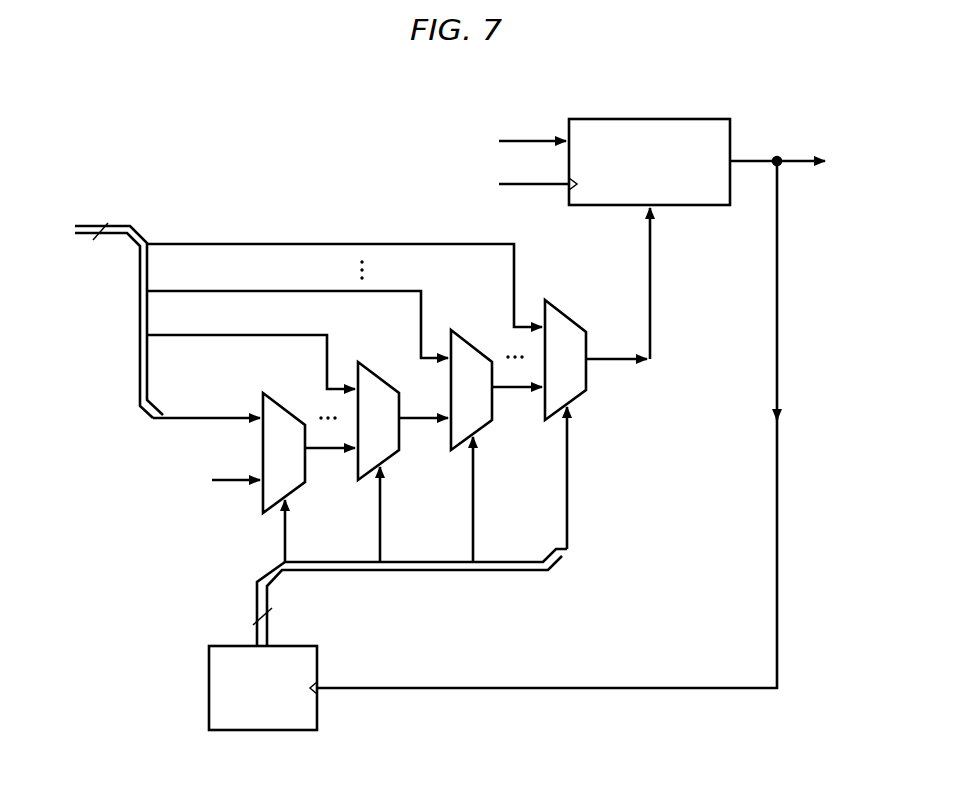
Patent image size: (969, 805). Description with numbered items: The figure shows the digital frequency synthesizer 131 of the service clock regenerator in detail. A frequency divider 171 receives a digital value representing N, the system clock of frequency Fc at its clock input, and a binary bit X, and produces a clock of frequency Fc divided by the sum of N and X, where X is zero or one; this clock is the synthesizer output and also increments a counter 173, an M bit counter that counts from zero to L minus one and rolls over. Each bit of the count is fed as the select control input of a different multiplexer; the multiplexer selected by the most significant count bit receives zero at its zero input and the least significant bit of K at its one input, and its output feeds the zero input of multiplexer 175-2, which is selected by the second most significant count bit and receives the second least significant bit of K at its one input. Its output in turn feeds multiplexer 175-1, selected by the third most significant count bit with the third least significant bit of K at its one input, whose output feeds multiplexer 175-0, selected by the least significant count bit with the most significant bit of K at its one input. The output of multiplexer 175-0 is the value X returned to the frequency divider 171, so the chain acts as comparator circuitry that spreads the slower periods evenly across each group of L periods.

The digital frequency synthesizer 131 is at (244, 143).
The frequency divider 171 is at (606, 208).
The counter 173 is at (263, 735).
The multiplexer 175-2 is at (393, 453).
The multiplexer 175-1 is at (487, 423).
The multiplexer 175-0 is at (580, 395).